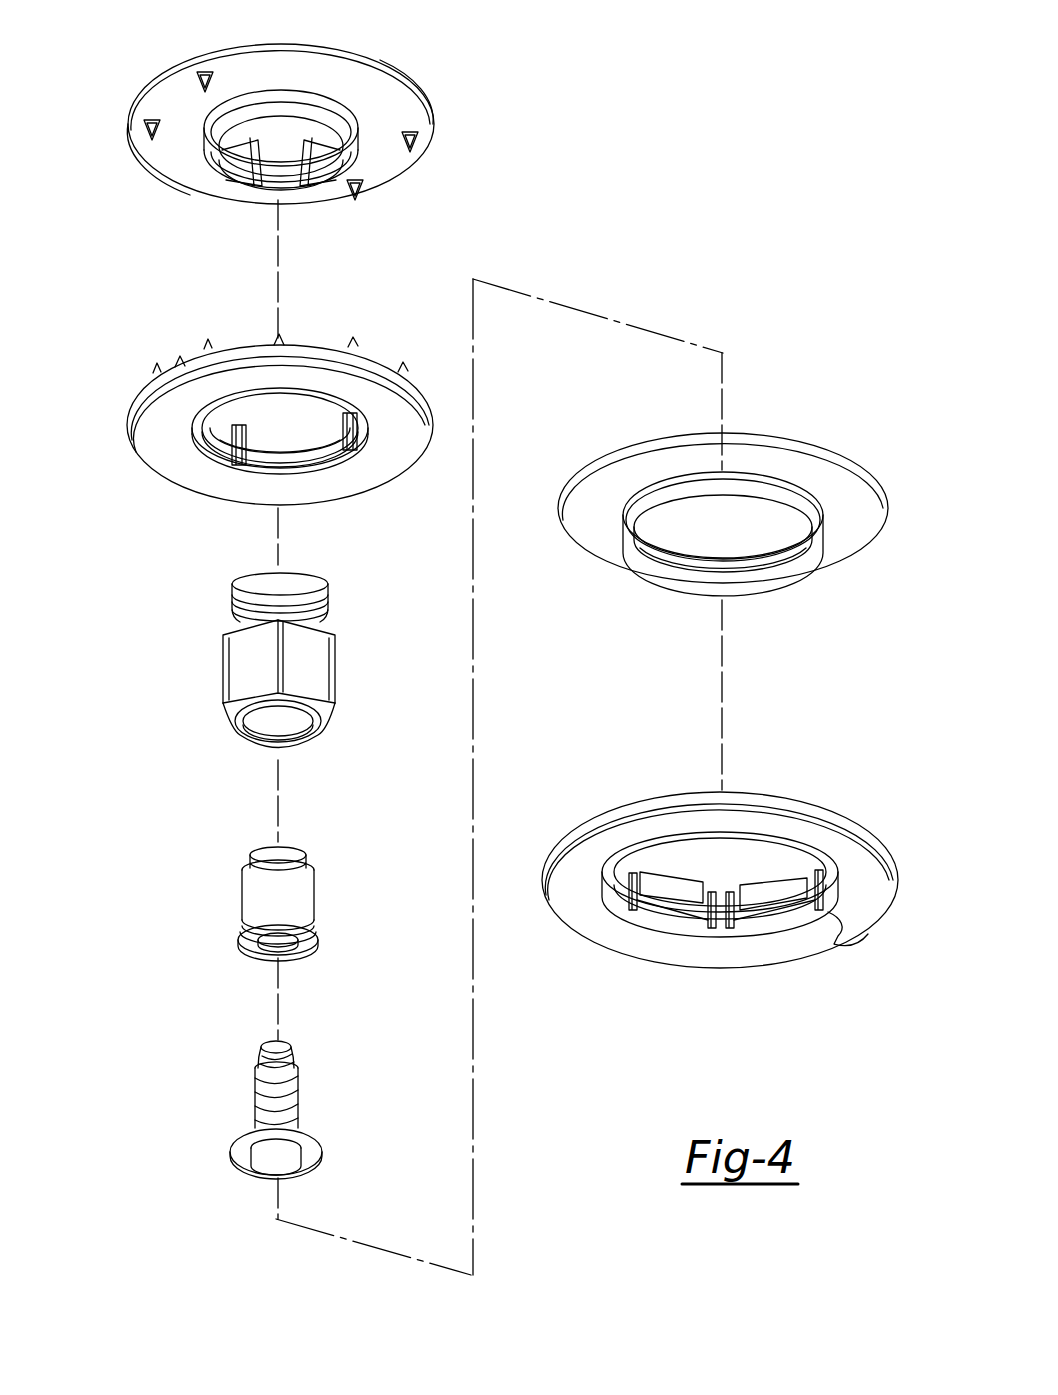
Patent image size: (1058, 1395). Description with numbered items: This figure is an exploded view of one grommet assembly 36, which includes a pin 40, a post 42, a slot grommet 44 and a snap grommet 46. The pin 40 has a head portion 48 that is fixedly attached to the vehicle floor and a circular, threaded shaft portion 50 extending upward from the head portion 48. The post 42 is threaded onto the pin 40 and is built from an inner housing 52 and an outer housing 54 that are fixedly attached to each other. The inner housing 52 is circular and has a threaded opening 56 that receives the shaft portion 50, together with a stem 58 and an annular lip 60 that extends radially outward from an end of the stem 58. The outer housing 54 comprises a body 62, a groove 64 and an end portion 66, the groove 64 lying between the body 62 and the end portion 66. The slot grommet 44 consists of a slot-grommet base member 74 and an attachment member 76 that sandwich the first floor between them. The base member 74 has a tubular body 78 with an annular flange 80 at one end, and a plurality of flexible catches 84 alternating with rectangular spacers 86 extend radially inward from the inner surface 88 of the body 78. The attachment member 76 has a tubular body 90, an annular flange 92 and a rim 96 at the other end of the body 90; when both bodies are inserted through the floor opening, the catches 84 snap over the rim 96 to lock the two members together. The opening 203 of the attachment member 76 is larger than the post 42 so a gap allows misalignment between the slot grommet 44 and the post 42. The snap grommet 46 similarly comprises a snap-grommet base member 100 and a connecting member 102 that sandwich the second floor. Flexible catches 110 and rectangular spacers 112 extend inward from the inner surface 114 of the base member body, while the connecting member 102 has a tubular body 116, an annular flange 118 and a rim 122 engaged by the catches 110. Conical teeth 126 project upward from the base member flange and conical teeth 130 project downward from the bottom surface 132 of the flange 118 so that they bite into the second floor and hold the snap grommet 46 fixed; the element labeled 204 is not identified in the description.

The grommet assembly 36 is at (195, 838).
The pin 40 is at (273, 1107).
The post 42 is at (318, 762).
The slot grommet 44 is at (838, 706).
The snap grommet 46 is at (488, 202).
The head portion 48 is at (245, 1153).
The shaft portion 50 is at (270, 1100).
The inner housing 52 is at (287, 926).
The outer housing 54 is at (212, 641).
The opening 56 is at (252, 922).
The stem 58 is at (296, 886).
The lip 60 is at (305, 945).
The body 62 is at (236, 666).
The groove 64 is at (282, 648).
The end portion 66 is at (237, 594).
The slot-grommet base member 74 is at (733, 884).
The attachment member 76 is at (723, 523).
The body 78 is at (733, 888).
The flange 80 is at (870, 906).
The flexible catches 84 is at (672, 885).
The spacers 86 is at (718, 922).
The inner surface 88 is at (665, 906).
The body 90 is at (754, 502).
The flange 92 is at (856, 540).
The rim 96 is at (626, 538).
The snap-grommet base member 100 is at (115, 372).
The connecting member 102 is at (468, 97).
The flexible catches 110 is at (276, 434).
The spacers 112 is at (236, 444).
The inner surface 114 is at (300, 452).
The body 116 is at (292, 112).
The flange 118 is at (378, 102).
The rim 122 is at (210, 135).
The teeth 126 is at (403, 370).
The teeth 130 is at (408, 142).
The bottom surface 132 is at (152, 148).
The opening 203 is at (706, 528).
The spike 204 is at (180, 362).